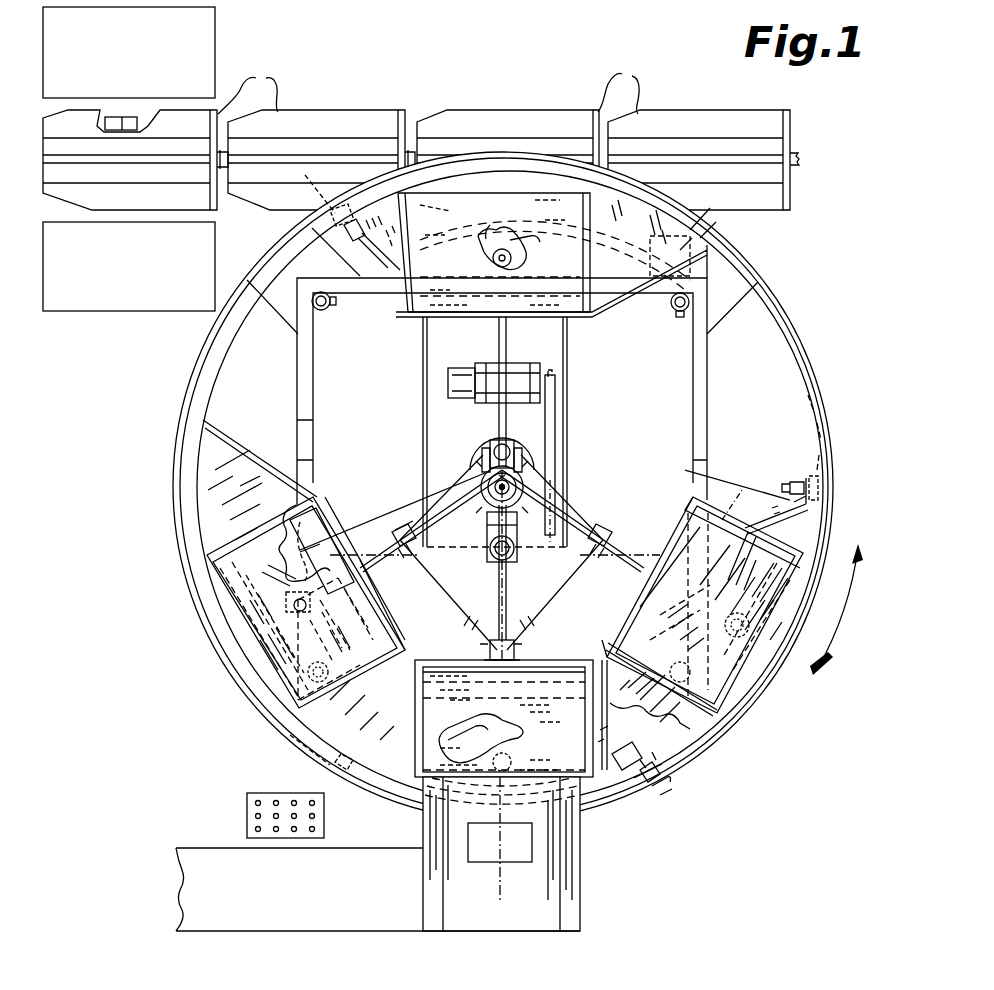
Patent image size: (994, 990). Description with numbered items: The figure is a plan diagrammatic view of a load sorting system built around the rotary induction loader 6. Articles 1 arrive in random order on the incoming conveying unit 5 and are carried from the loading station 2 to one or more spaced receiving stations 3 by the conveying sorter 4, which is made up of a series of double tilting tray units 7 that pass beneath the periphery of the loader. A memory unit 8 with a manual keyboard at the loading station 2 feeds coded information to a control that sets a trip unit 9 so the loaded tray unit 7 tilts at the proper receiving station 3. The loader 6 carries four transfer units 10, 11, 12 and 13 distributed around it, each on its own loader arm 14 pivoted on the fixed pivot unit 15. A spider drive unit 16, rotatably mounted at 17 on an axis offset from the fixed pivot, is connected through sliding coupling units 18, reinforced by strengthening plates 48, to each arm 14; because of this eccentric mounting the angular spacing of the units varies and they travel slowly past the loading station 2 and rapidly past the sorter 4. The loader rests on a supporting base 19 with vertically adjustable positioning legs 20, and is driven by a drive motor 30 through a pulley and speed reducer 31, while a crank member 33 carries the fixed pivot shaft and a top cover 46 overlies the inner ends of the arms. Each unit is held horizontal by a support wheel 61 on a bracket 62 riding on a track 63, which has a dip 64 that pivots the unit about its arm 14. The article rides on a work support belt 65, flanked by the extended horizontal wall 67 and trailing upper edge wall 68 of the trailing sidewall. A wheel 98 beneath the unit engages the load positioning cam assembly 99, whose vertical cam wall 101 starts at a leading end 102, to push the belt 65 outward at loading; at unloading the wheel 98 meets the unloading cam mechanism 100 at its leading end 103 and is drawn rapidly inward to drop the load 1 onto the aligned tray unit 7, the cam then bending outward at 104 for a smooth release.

The articles 1 is at (601, 687).
The loading station 2 is at (478, 854).
The receiving stations 3 is at (534, 871).
The conveying sorter 4 is at (367, 111).
The incoming conveying unit 5 is at (378, 889).
The rotary induction loader 6 is at (214, 660).
The double tilting tray units 7 is at (428, 90).
The memory unit 8 is at (247, 796).
The trip unit 9 is at (118, 130).
The transfer unit 10 is at (586, 653).
The transfer unit 11 is at (326, 520).
The transfer unit 12 is at (420, 321).
The transfer unit 13 is at (678, 518).
The loader arm 14 is at (508, 340).
The fixed pivot unit 15 is at (484, 482).
The spider drive unit 16 is at (580, 493).
The spider rotatable mounting 17 is at (494, 565).
The sliding coupling units 18 is at (396, 526).
The supporting base 19 is at (688, 427).
The vertically adjustable positioning legs 20 is at (324, 312).
The drive motor 30 is at (475, 364).
The pulley and speed reducer 31 is at (556, 470).
The crank member 33 is at (520, 548).
The top cover 46 is at (490, 448).
The strengthening plates 48 is at (486, 630).
The support wheel 61 is at (330, 172).
The bracket 62 is at (382, 244).
The track 63 is at (680, 767).
The dip 64 is at (823, 421).
The work support belt 65 is at (504, 718).
The extended horizontal wall 67 is at (638, 210).
The trailing upper edge wall 68 is at (266, 438).
The wheel 98 is at (490, 252).
The load positioning cam assembly 99 is at (296, 556).
The unloading cam mechanism 100 is at (531, 242).
The vertical cam wall 101 is at (292, 594).
The leading end of cam wall 102 is at (300, 496).
The leading end of unloading cam 103 is at (737, 257).
The outwardly bent final portion 104 is at (494, 230).